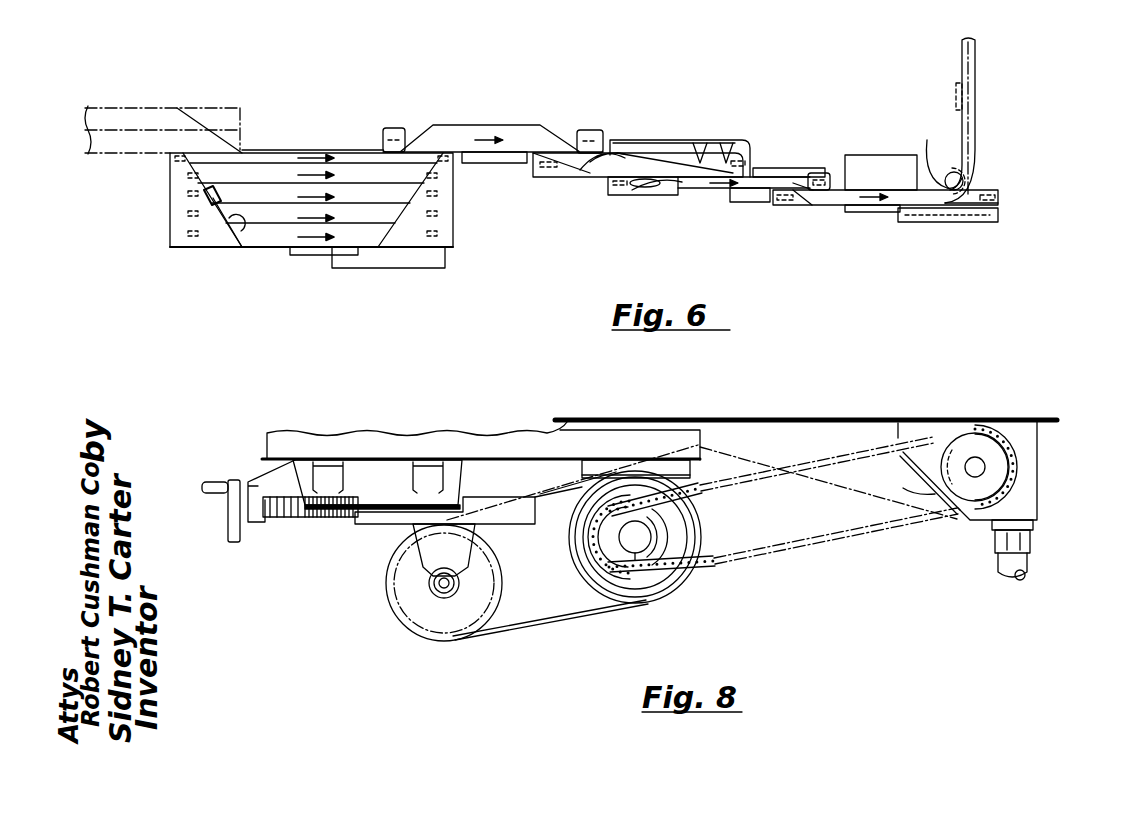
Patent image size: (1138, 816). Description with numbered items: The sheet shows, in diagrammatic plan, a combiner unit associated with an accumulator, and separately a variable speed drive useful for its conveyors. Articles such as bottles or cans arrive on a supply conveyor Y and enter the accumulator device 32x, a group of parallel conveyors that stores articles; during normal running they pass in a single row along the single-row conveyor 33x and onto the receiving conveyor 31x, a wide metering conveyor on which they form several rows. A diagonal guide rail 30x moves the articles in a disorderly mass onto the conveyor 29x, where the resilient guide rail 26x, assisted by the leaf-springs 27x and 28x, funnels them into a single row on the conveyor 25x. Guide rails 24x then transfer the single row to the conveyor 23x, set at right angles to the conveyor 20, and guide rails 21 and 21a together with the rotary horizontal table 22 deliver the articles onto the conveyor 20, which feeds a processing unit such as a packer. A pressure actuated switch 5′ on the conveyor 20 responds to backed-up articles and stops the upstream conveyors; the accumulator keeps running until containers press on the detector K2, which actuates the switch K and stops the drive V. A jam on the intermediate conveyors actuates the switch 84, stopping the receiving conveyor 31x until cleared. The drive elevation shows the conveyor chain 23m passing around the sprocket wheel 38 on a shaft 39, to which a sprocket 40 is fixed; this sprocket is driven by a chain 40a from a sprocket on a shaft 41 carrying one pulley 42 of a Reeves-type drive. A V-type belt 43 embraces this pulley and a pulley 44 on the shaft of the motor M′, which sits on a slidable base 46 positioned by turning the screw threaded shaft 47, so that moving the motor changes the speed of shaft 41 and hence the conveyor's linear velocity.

In FIG. 6, the supply conveyor Y is at (164, 142).
In FIG. 6, the accumulator device 32x is at (304, 131).
In FIG. 6, the single-row conveyor 33x is at (360, 157).
In FIG. 6, the receiving conveyor 31x is at (460, 140).
In FIG. 6, the diagonal guide rail 30x is at (567, 134).
In FIG. 6, the conveyor 29x is at (637, 160).
In FIG. 6, the resilient guide rail 26x is at (687, 150).
In FIG. 6, the leaf-spring 27x is at (597, 173).
In FIG. 6, the switch 84 is at (634, 192).
In FIG. 6, the leaf-spring 28x is at (683, 195).
In FIG. 6, the conveyor 25x is at (773, 185).
In FIG. 6, the guide rails 24x is at (810, 172).
In FIG. 6, the conveyor 23x is at (838, 205).
In FIG. 6, the conveyor 20 is at (972, 65).
In FIG. 6, the pressure actuated switch 5′ is at (952, 102).
In FIG. 6, the guide rail 21 is at (936, 152).
In FIG. 6, the rotary horizontal table 22 is at (957, 170).
In FIG. 6, the guide rail 21a is at (978, 177).
In FIG. 6, the switch K is at (204, 197).
In FIG. 6, the detector K2 is at (240, 248).
In FIG. 6, the drive V is at (319, 256).
In FIG. 8, the screw threaded shaft 47 is at (291, 519).
In FIG. 8, the slidable base 46 is at (524, 518).
In FIG. 8, the pulley 44 is at (432, 623).
In FIG. 8, the belt 43 is at (565, 620).
In FIG. 8, the motor M′ is at (506, 606).
In FIG. 8, the pulley 42 is at (594, 574).
In FIG. 8, the shaft 41 is at (651, 532).
In FIG. 8, the chain 23m is at (840, 484).
In FIG. 8, the chain 40a is at (787, 549).
In FIG. 8, the sprocket wheel 38 is at (913, 483).
In FIG. 8, the shaft 39 is at (984, 467).
In FIG. 8, the sprocket 40 is at (993, 480).